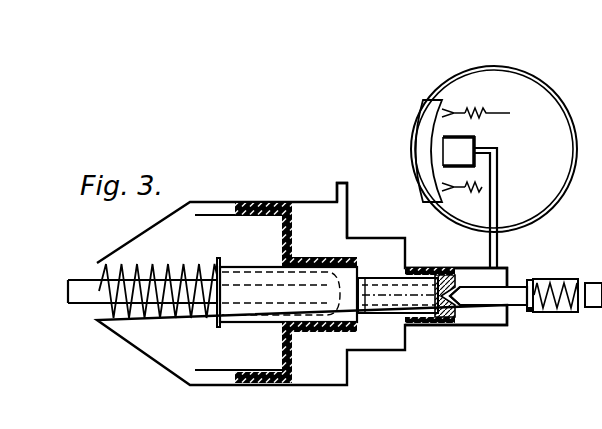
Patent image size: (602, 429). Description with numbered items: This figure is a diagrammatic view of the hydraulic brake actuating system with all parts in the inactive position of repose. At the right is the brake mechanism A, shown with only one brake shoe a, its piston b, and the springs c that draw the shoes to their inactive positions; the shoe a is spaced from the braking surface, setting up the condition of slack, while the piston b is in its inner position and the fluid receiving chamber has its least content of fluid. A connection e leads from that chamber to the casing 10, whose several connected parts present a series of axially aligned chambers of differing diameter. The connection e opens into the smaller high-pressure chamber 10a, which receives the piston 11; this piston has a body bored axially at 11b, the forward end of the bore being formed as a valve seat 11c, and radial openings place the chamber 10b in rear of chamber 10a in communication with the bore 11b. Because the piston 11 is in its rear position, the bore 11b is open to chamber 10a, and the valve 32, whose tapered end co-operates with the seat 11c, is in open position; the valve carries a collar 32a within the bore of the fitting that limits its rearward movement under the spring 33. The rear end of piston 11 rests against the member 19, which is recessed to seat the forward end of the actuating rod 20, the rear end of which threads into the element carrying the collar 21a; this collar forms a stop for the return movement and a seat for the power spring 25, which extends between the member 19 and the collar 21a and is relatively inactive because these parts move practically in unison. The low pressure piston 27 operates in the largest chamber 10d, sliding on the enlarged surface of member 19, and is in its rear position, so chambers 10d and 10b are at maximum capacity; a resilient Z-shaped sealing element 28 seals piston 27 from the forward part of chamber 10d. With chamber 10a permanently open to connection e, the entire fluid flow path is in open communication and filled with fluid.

The casing 10 is at (281, 203).
The high-pressure chamber 10a is at (486, 314).
The chamber 10b is at (413, 283).
The chamber 10d is at (322, 212).
The piston 11 is at (441, 323).
The bore 11b is at (437, 270).
The valve seat 11c is at (452, 290).
The member 19 is at (327, 292).
The actuating rod 20 is at (168, 297).
The collar 21a is at (97, 270).
The power spring 25 is at (182, 272).
The low pressure piston 27 is at (282, 350).
The sealing element 28 is at (291, 351).
The valve 32 is at (505, 295).
The collar 32a is at (530, 313).
The spring 33 is at (552, 312).
The brake mechanism A is at (503, 149).
The brake shoe a is at (431, 150).
The piston b is at (459, 151).
The springs c is at (469, 207).
The connection e is at (505, 192).